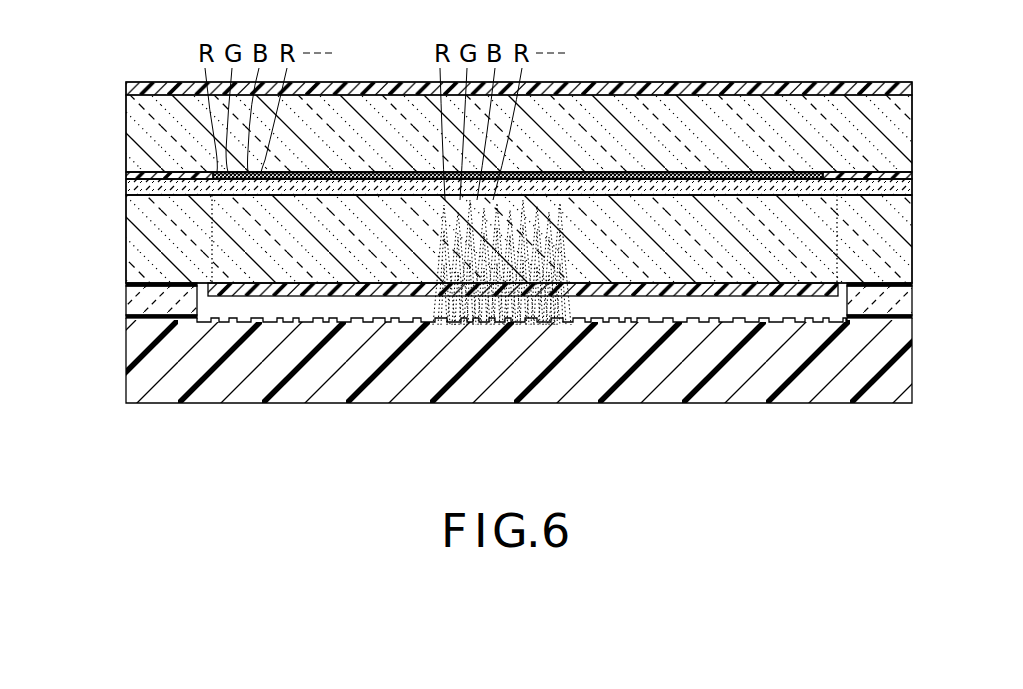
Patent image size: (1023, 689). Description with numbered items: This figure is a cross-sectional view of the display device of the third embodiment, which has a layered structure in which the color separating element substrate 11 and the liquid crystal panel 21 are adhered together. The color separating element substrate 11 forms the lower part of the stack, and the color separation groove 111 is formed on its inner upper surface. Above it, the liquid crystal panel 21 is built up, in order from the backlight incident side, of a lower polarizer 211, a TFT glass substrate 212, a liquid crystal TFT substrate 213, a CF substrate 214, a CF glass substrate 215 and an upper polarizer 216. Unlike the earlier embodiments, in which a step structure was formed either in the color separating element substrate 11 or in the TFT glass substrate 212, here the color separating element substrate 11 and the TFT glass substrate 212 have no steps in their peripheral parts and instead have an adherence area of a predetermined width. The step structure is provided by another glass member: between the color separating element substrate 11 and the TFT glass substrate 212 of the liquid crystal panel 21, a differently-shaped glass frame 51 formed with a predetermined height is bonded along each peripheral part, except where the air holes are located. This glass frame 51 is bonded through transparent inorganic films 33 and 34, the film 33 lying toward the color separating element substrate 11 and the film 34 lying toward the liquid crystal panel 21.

The liquid crystal panel 21 is at (918, 84).
The upper polarizer 216 is at (128, 90).
The CF glass substrate 215 is at (130, 125).
The CF substrate 214 is at (128, 174).
The liquid crystal TFT substrate 213 is at (128, 190).
The TFT glass substrate 212 is at (136, 240).
The lower polarizer 211 is at (680, 297).
The transparent inorganic film 34 is at (126, 284).
The glass frame 51 is at (136, 298).
The transparent inorganic film 33 is at (126, 317).
The color separating element substrate 11 is at (918, 320).
The color separation groove 111 is at (762, 322).